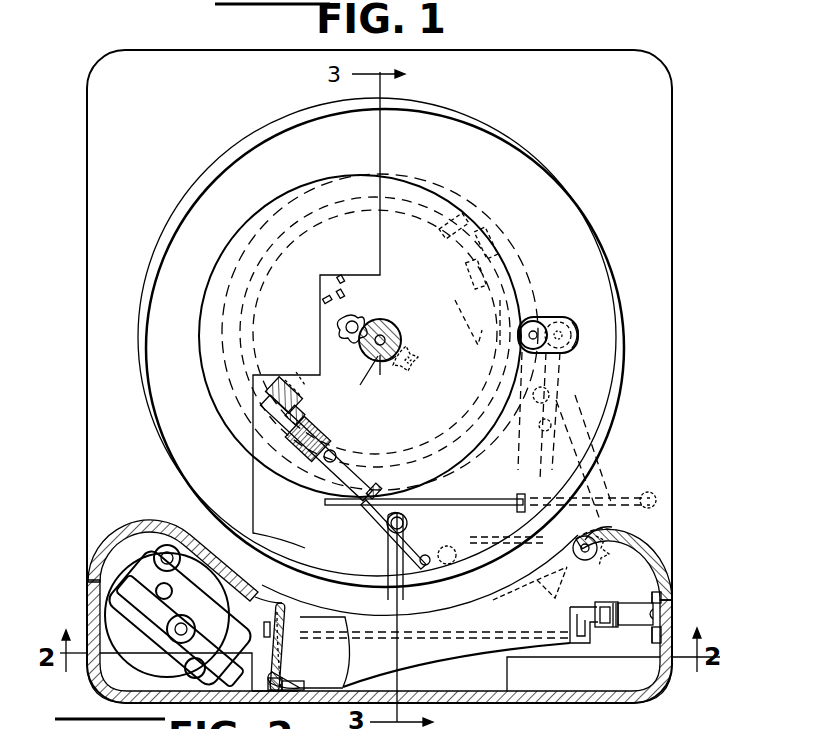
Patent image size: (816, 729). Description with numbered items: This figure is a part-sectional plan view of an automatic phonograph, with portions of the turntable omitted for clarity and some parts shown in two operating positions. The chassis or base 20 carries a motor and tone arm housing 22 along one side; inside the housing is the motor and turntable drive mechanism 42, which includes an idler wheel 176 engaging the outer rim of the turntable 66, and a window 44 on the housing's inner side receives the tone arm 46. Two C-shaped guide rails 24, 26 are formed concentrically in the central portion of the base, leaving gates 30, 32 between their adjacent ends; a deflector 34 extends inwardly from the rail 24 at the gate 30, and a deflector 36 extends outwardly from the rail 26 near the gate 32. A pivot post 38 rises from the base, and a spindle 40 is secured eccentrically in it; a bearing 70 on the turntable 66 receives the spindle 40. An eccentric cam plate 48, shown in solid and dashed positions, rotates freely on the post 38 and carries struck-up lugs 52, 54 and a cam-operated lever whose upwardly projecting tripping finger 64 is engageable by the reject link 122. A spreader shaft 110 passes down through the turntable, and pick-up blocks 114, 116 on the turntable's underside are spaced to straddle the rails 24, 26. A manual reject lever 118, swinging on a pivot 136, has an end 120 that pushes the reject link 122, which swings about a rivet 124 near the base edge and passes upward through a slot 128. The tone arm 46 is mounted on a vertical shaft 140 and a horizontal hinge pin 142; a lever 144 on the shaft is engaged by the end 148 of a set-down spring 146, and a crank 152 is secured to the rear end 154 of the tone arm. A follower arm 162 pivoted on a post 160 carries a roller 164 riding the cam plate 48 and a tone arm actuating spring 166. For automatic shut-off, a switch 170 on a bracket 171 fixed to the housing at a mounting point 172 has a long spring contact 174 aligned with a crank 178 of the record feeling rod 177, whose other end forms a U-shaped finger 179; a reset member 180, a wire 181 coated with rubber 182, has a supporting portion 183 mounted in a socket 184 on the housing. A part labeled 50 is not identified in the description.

The chassis or base 20 is at (673, 198).
The motor and tone arm housing 22 is at (545, 703).
The C-shaped guide rail 24 is at (262, 306).
The C-shaped guide rail 26 is at (477, 328).
The gate 30 is at (308, 424).
The gate 32 is at (455, 248).
The extension or deflector 34 is at (310, 405).
The extension or deflector 36 is at (495, 232).
The pivot post 38 is at (372, 320).
The spindle 40 is at (395, 336).
The motor and turntable drive mechanism 42 is at (152, 662).
The opening or window 44 is at (268, 592).
The tone arm 46 is at (445, 662).
The eccentric cam plate 48 is at (210, 288).
The platter 50 is at (203, 345).
The lug 52 is at (342, 318).
The lug 54 is at (340, 276).
The tripping finger 64 is at (385, 488).
The turntable 66 is at (136, 346).
The bearing 70 is at (366, 377).
The spreader shaft 110 is at (345, 328).
The pick-up block 114 is at (278, 405).
The pick-up block 116 is at (295, 452).
The manual reject-lever 118 is at (388, 542).
The lever end 120 is at (366, 510).
The reject link 122 is at (507, 505).
The rivet 124 is at (648, 490).
The slot 128 is at (520, 494).
The pivot 136 is at (407, 523).
The vertical shaft 140 is at (603, 524).
The horizontal hinge pin 142 is at (585, 560).
The horizontally extending lever 144 is at (504, 544).
The set-down spring 146 is at (438, 549).
The end of set-down spring 148 is at (420, 575).
The crank 152 is at (666, 552).
The rear end of tone arm 154 is at (658, 524).
The pivot post 160 is at (551, 393).
The follower arm 162 is at (553, 424).
The roller or cam follower 164 is at (540, 322).
The tone arm actuating spring 166 is at (598, 452).
The switch 170 is at (604, 628).
The bracket 171 is at (630, 626).
The bracket mounting point 172 is at (672, 617).
The long spring contact 174 is at (622, 606).
The idler wheel 176 is at (148, 503).
The record feeling member 177 is at (447, 632).
The crank 178 is at (578, 614).
The U-shaped finger 179 is at (264, 627).
The reset member 180 is at (272, 606).
The wire 181 is at (284, 651).
The rubber layer 182 is at (262, 700).
The supporting portion 183 is at (296, 692).
The socket 184 is at (305, 685).